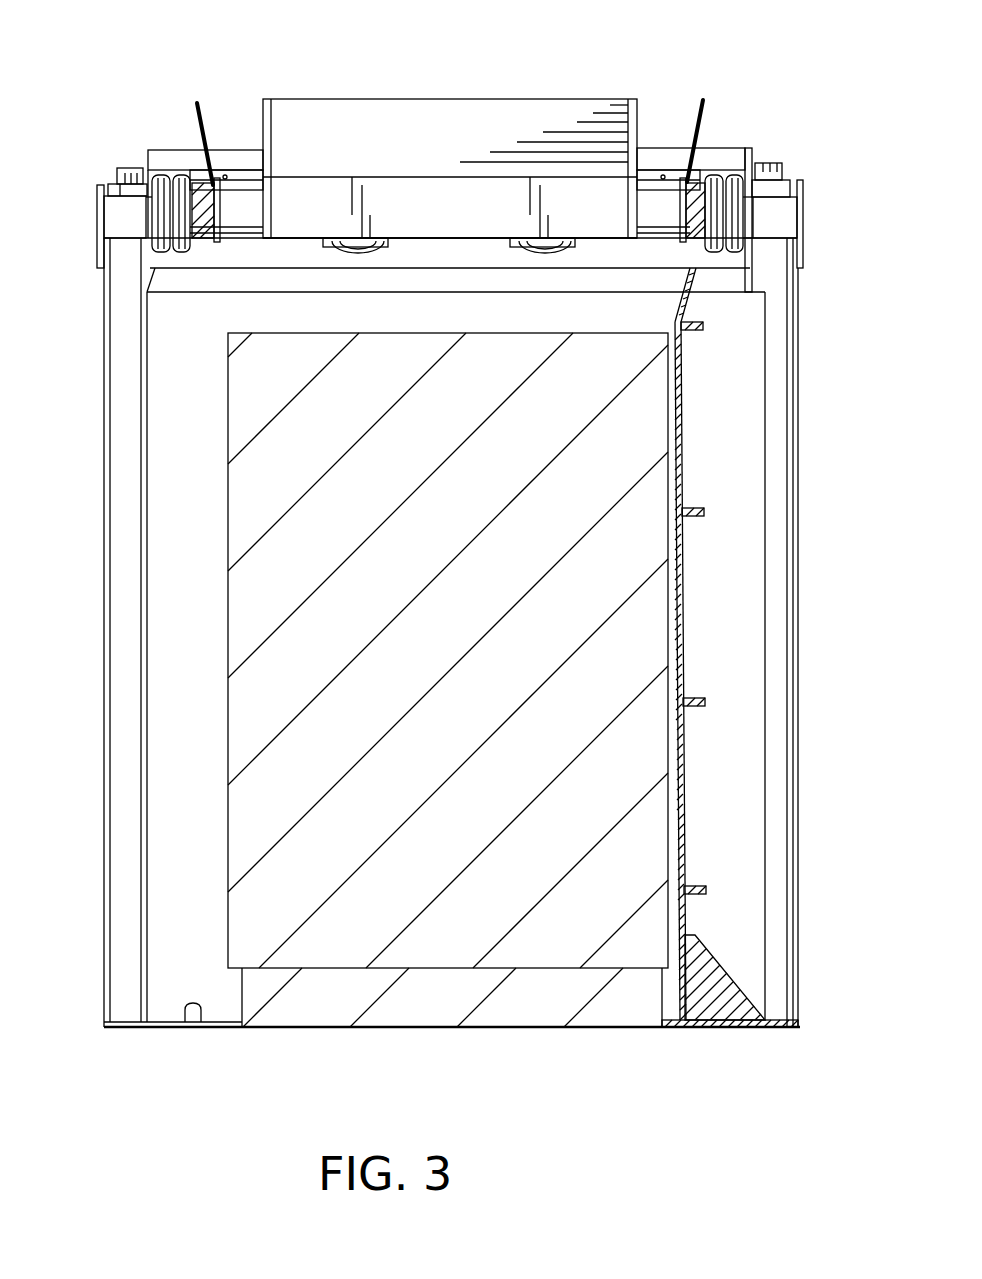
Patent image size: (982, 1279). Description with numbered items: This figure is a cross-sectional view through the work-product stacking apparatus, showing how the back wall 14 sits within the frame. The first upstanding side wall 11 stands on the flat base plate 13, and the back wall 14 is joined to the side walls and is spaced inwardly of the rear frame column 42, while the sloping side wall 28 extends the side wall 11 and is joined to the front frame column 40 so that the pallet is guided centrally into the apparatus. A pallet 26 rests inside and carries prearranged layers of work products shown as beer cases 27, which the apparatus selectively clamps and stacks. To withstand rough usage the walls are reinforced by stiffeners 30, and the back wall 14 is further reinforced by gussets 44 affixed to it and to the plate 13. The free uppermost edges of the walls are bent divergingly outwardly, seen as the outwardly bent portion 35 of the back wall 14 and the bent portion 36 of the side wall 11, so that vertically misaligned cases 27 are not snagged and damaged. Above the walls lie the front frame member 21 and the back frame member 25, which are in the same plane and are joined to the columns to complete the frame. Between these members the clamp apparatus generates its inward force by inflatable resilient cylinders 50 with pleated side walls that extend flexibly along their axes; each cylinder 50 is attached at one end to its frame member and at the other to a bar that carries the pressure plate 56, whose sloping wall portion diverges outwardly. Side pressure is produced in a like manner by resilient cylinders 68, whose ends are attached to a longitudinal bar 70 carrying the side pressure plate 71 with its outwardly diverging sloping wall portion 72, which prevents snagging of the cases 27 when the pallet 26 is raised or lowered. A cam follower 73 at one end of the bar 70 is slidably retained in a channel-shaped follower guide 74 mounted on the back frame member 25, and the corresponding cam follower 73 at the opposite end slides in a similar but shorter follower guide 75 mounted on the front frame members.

The first upstanding side wall 11 is at (770, 612).
The base plate 13 is at (185, 1012).
The back wall 14 is at (683, 566).
The front frame member 21 is at (123, 222).
The back frame member 25 is at (763, 238).
The pallet 26 is at (328, 1008).
The beer cases 27 is at (246, 740).
The sloping side wall 28 is at (160, 382).
The stiffeners 30 is at (701, 512).
The outwardly bent portion 35 is at (689, 303).
The bent portion 36 is at (428, 293).
The front frame column 40 is at (122, 608).
The rear frame column 42 is at (784, 421).
The gussets 44 is at (717, 958).
The resilient cylinders 50 is at (181, 172).
The pressure plate 56 is at (203, 118).
The resilient cylinders 68 is at (347, 248).
The longitudinal bar 70 is at (722, 155).
The side pressure plate 71 is at (486, 92).
The sloping wall portion 72 is at (357, 118).
The cam follower 73 is at (148, 150).
The follower guide 74 is at (766, 164).
The follower guide 75 is at (124, 168).